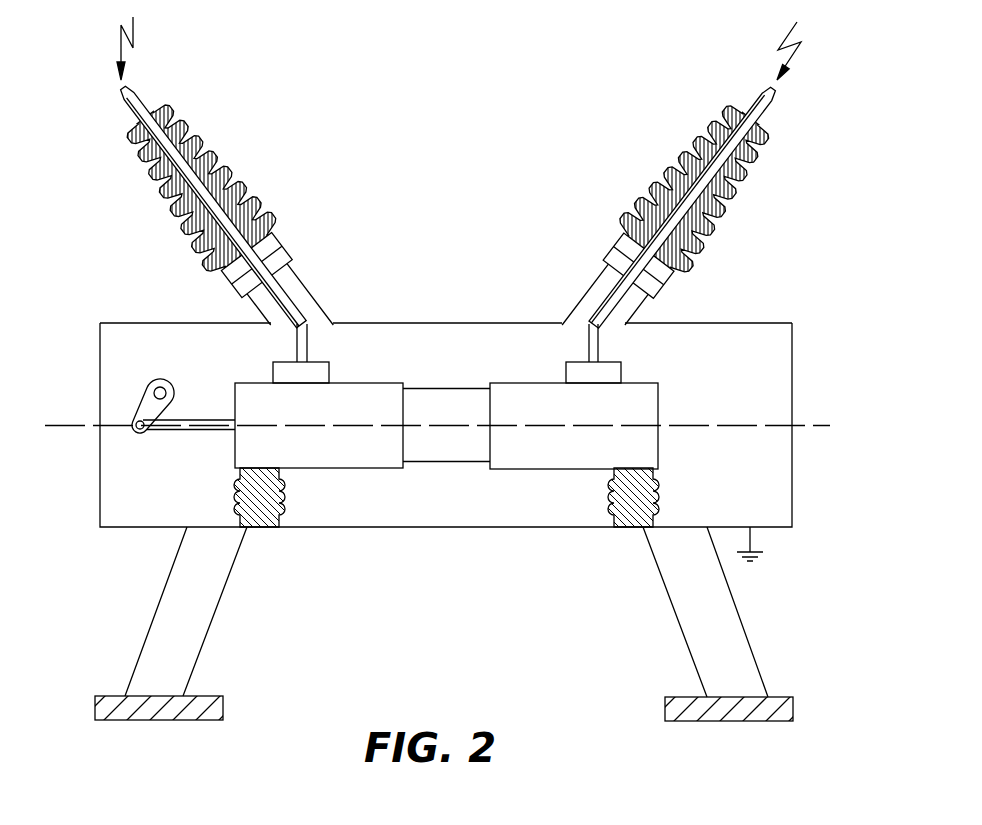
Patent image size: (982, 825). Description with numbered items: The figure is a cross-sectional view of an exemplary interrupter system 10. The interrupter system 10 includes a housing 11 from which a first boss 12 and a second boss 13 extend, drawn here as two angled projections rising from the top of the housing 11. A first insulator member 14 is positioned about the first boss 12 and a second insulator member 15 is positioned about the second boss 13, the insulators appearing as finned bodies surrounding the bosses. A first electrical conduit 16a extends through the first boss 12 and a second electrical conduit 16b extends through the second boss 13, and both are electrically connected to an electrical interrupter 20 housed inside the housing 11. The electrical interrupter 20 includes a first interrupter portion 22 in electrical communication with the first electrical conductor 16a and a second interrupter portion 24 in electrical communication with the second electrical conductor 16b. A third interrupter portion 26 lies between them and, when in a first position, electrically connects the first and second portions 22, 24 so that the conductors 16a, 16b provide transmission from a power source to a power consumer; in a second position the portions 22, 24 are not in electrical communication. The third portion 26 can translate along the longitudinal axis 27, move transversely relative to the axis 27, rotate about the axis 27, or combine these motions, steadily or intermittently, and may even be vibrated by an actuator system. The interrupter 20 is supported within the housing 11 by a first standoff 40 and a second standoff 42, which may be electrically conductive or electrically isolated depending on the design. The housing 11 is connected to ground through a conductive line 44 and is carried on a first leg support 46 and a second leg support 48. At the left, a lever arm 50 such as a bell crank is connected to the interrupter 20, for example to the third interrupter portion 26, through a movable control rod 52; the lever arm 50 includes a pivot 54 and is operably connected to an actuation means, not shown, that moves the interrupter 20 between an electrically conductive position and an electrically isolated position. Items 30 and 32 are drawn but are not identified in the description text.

The interrupter system 10 is at (530, 80).
The housing 11 is at (100, 497).
The first boss 12 is at (294, 276).
The second boss 13 is at (599, 278).
The first insulator member 14 is at (242, 177).
The second insulator member 15 is at (650, 183).
The first electrical conduit 16a is at (282, 315).
The second electrical conduit 16b is at (660, 306).
The electrical interrupter 20 is at (458, 500).
The first interrupter portion 22 is at (368, 470).
The second interrupter portion 24 is at (518, 470).
The third interrupter portion 26 is at (438, 388).
The axis 27 is at (713, 426).
The first bushing 30 is at (320, 360).
The second bushing 32 is at (568, 360).
The first standoff 40 is at (293, 527).
The second standoff 42 is at (608, 513).
The conductive line 44 is at (752, 543).
The first leg support 46 is at (168, 632).
The second leg support 48 is at (698, 635).
The lever arm 50 is at (153, 373).
The movable control rod 52 is at (197, 432).
The pivot 54 is at (166, 388).